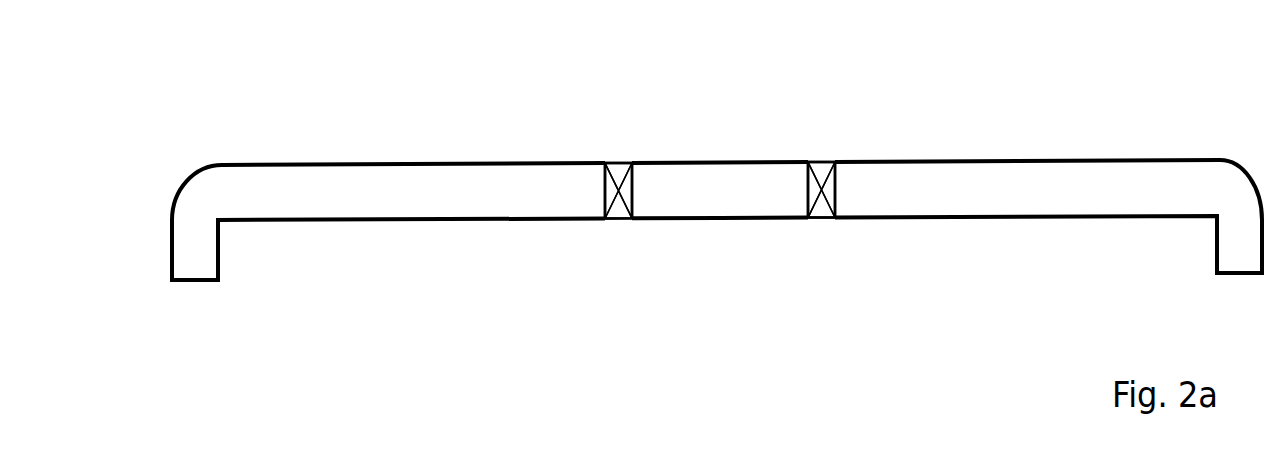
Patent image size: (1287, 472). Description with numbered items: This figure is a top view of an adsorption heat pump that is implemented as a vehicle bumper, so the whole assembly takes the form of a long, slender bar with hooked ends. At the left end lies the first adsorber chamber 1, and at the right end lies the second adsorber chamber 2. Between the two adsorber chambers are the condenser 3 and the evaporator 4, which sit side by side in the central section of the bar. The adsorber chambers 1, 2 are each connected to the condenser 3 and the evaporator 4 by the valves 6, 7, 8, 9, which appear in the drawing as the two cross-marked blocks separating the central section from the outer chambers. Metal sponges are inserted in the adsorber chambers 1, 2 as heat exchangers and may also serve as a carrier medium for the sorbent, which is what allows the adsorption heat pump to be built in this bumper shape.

The first adsorber chamber 1 is at (388, 221).
The second adsorber chamber 2 is at (1048, 216).
The condenser 3 is at (676, 191).
The evaporator 4 is at (764, 190).
The valve 6 is at (620, 161).
The valve 7 is at (620, 161).
The valve 8 is at (818, 160).
The valve 9 is at (818, 160).